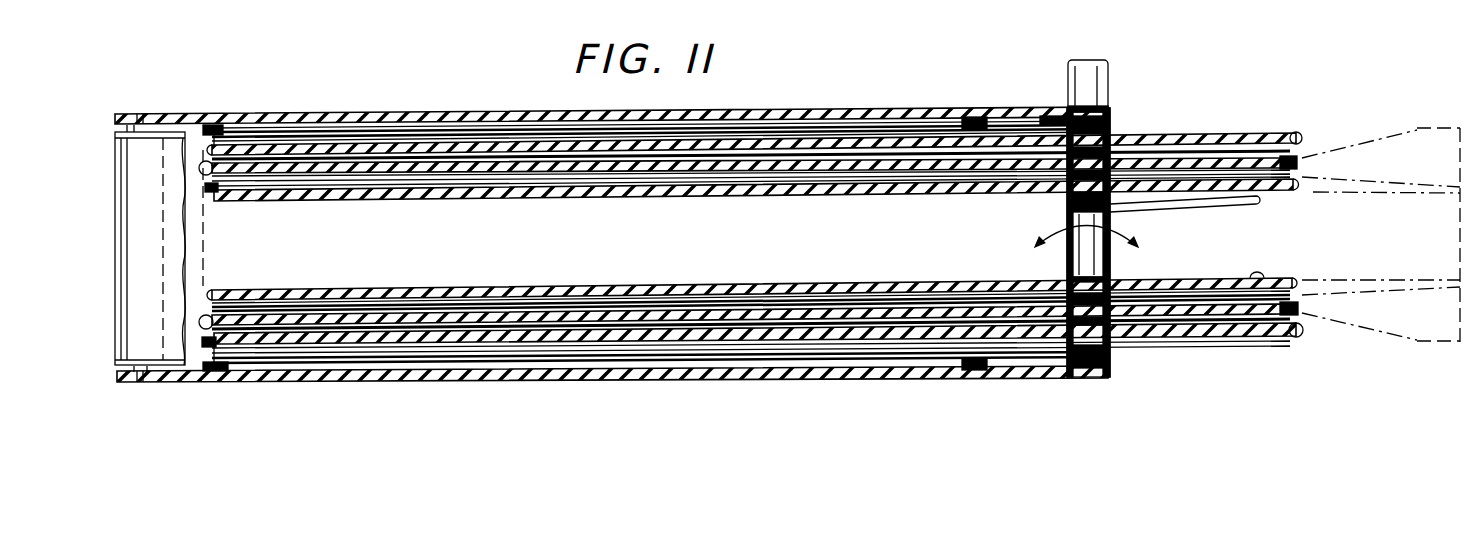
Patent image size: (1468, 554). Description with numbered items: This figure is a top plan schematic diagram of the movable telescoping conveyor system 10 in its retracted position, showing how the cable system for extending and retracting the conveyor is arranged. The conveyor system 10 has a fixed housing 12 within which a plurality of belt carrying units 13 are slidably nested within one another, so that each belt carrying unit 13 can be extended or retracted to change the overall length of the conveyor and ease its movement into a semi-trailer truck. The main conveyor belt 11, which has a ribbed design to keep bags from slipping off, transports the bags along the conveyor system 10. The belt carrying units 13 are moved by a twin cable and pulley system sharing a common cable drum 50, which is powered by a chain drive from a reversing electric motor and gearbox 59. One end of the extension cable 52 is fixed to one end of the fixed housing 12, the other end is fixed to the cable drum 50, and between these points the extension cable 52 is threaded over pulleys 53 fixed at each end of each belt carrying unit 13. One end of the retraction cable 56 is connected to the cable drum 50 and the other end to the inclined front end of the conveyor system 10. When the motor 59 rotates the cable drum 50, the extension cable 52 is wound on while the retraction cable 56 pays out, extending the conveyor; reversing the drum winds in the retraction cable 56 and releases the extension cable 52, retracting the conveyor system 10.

The movable telescoping conveyor system 10 is at (408, 92).
The main conveyor belt 11 is at (155, 153).
The fixed housing 12 is at (191, 116).
The belt carrying units 13 is at (848, 200).
The cable drum 50 is at (1066, 265).
The extension cable 52 is at (816, 116).
The pulleys 53 is at (243, 115).
The retraction cable 56 is at (1223, 207).
The reversing electric motor and gearbox 59 is at (1140, 38).